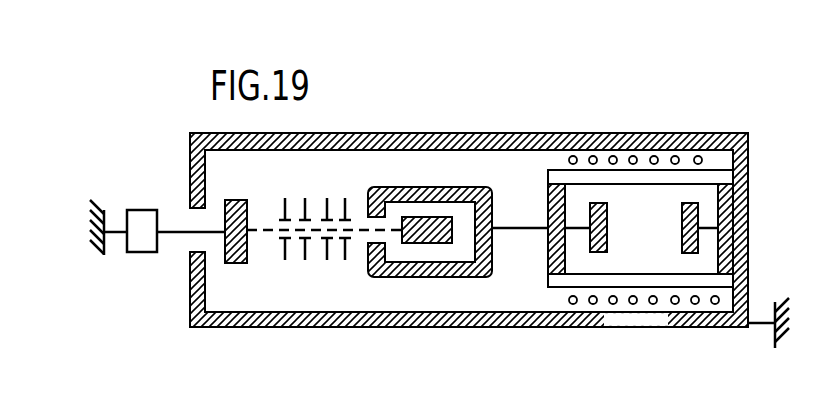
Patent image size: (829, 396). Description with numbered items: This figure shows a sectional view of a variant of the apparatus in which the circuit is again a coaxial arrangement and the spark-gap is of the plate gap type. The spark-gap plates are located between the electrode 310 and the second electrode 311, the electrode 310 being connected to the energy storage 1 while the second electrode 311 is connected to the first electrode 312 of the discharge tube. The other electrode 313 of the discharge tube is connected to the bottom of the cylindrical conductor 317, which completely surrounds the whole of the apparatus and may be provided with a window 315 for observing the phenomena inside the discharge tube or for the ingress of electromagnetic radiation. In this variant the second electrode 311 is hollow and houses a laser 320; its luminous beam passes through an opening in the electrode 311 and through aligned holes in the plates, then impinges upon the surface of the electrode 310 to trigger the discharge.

The energy storage 1 is at (147, 230).
The electrode 310 is at (236, 263).
The second electrode 311 is at (431, 187).
The first electrode of the discharge tube 312 is at (632, 236).
The other electrode of the discharge tube 313 is at (700, 214).
The window 315 is at (633, 316).
The cylindrical conductor 317 is at (552, 138).
The laser 320 is at (406, 243).